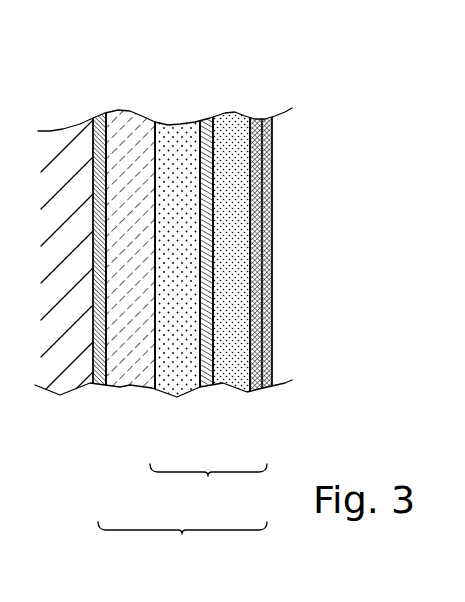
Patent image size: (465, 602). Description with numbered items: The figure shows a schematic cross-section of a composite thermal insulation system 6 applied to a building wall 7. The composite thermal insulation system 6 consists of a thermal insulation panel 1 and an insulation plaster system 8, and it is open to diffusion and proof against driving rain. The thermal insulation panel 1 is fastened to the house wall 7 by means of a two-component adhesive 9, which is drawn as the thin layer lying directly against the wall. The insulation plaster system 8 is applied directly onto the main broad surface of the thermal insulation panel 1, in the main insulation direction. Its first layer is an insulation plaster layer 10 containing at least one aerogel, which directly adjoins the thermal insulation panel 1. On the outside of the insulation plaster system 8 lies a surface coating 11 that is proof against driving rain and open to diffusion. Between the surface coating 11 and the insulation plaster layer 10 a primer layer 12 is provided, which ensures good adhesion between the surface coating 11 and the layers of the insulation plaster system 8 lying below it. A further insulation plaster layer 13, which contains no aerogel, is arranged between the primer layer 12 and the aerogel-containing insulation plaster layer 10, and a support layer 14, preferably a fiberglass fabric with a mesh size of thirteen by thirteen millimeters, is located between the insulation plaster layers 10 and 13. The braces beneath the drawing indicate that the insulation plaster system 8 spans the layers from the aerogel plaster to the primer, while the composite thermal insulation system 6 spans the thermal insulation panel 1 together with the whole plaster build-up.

The building wall 7 is at (46, 126).
The 2-component adhesive 9 is at (93, 118).
The thermal insulation panel 1 is at (125, 387).
The insulation plaster layer 10 is at (176, 127).
The further insulation plaster layer 13 is at (230, 113).
The surface coating 11 is at (264, 118).
The support layer 14 is at (205, 388).
The primer layer 12 is at (251, 390).
The insulation plaster system 8 is at (208, 477).
The composite thermal insulation system 6 is at (182, 535).